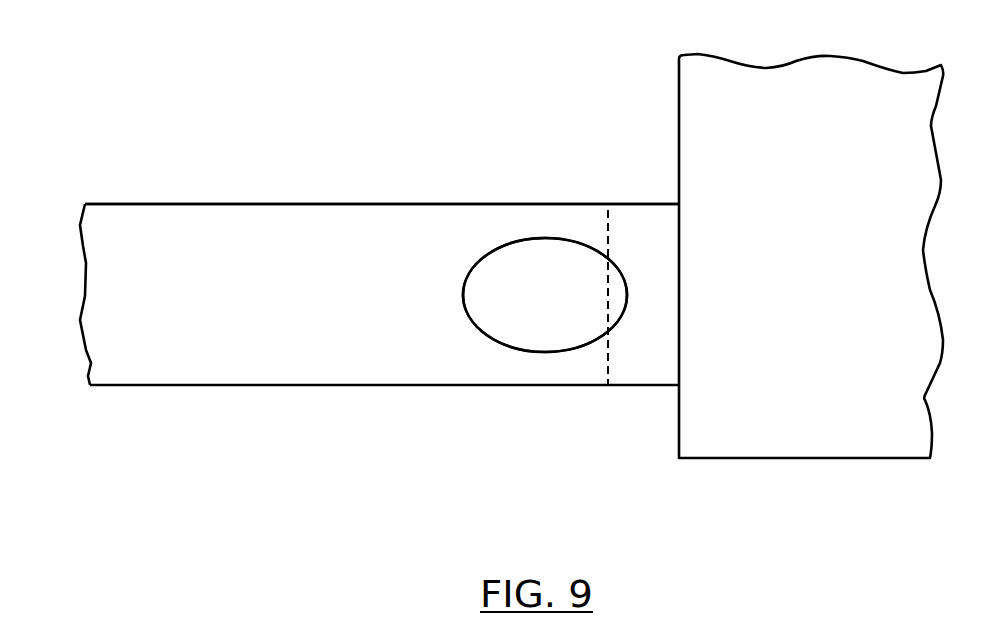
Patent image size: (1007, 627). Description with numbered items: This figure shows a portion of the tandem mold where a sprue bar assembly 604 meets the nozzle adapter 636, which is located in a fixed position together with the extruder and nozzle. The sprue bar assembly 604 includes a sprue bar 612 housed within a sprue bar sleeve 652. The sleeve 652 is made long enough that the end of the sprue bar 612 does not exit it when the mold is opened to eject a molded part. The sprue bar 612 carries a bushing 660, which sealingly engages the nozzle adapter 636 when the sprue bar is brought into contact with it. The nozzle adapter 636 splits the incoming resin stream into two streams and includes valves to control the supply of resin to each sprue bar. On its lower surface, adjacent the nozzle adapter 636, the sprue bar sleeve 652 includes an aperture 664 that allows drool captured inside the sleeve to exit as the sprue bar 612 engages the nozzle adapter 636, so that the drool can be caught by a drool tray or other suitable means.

The sprue bar assembly 604 is at (672, 189).
The sprue bar sleeve 652 is at (208, 308).
The sprue bar 612 is at (557, 312).
The aperture 664 is at (462, 308).
The bushing 660 is at (613, 292).
The nozzle adapter 636 is at (818, 247).